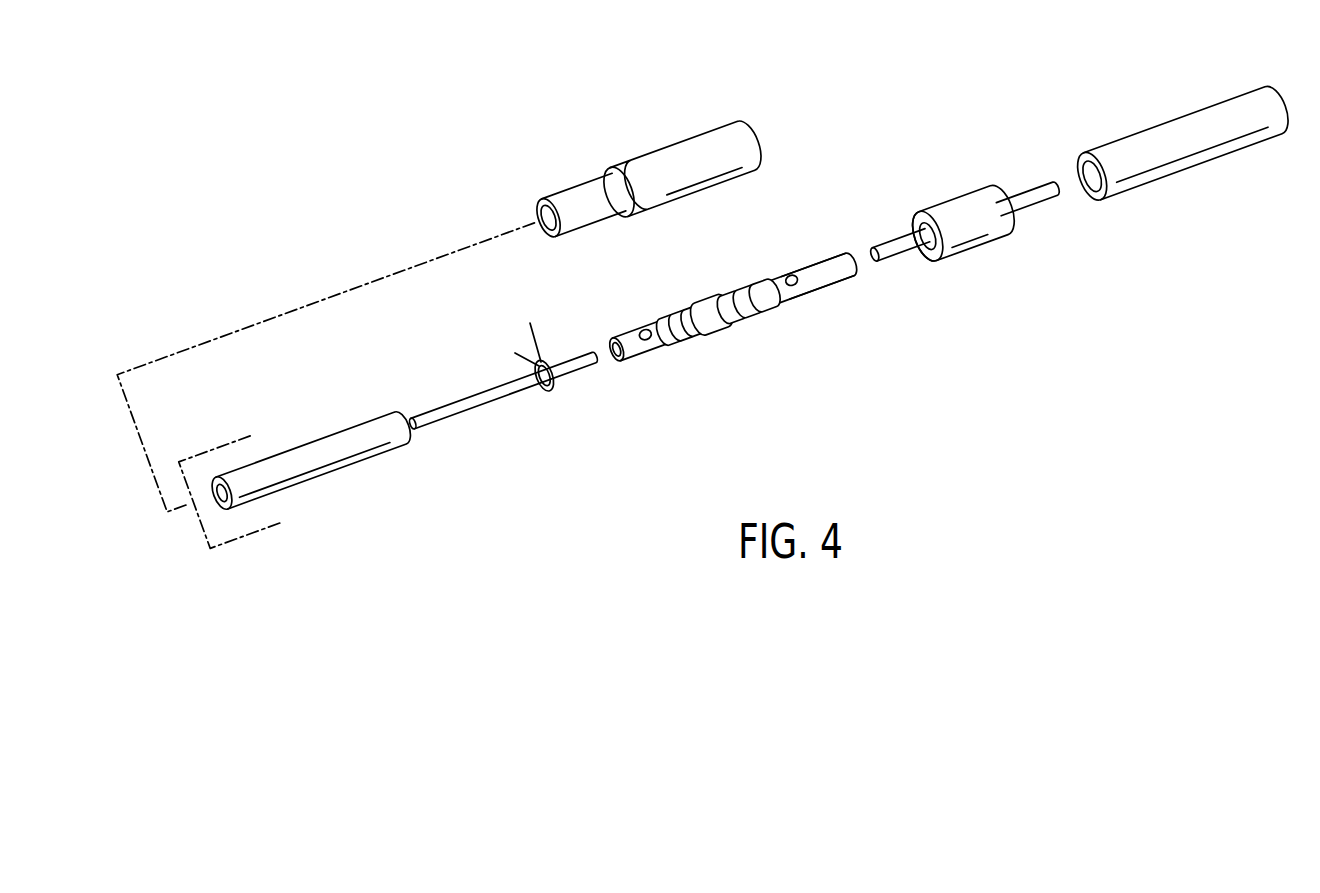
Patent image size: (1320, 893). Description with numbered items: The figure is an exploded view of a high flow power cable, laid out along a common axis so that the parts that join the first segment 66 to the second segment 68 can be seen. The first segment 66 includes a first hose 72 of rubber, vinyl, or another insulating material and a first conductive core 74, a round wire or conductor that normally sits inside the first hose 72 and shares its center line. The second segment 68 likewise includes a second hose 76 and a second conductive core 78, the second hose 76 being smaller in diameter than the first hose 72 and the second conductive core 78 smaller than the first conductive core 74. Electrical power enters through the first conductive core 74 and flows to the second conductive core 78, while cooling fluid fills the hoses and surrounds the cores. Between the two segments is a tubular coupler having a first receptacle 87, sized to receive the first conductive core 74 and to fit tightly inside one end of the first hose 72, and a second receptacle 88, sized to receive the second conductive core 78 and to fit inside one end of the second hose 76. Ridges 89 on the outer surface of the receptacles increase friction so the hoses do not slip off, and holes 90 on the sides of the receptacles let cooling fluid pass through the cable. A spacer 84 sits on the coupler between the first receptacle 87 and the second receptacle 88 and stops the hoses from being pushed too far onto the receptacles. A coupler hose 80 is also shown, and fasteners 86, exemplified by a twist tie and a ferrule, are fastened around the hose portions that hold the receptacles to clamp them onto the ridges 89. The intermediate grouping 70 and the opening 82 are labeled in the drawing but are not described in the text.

The first segment 66 is at (1094, 210).
The second segment 68 is at (417, 463).
The intermediate connector section 70 is at (732, 325).
The first hose 72 is at (1183, 137).
The first conductive core 74 is at (1018, 193).
The second hose 76 is at (303, 447).
The second conductive core 78 is at (503, 383).
The coupler hose 80 is at (677, 143).
The aperture 82 is at (796, 273).
The spacer 84 is at (693, 300).
The fasteners 86 is at (525, 343).
The first receptacle 87 is at (825, 250).
The second receptacle 88 is at (606, 347).
The ridges 89 is at (743, 288).
The holes 90 is at (798, 292).